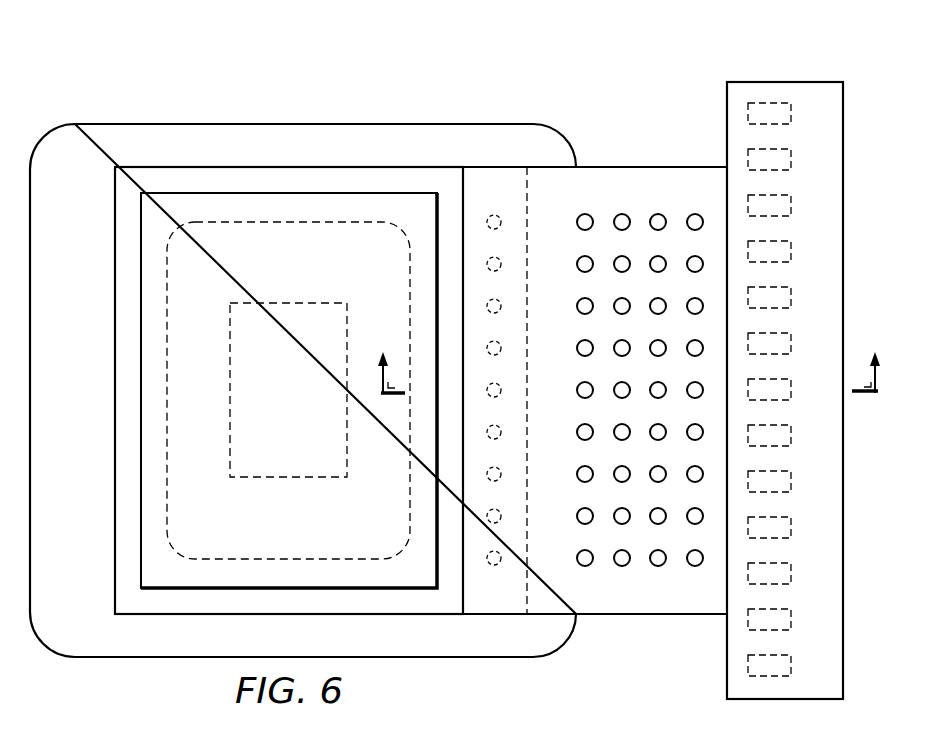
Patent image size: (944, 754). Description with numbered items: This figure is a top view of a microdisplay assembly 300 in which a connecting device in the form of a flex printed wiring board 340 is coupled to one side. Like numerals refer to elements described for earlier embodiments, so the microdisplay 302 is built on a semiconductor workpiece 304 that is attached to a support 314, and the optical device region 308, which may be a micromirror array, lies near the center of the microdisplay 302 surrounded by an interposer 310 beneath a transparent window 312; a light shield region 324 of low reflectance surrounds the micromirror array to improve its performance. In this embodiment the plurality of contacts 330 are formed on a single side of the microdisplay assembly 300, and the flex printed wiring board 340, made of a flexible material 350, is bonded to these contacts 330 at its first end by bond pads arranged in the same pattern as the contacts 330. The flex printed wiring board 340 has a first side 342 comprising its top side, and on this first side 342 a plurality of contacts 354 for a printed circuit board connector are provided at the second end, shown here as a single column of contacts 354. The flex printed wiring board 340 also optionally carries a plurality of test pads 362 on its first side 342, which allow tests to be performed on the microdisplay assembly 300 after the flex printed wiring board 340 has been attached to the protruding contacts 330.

The microdisplay assembly 300 is at (466, 359).
The microdisplay 302 is at (186, 141).
The workpiece 304 is at (497, 185).
The optical device region 308 is at (287, 325).
The interposer 310 is at (289, 333).
The window 312 is at (337, 203).
The support 314 is at (268, 130).
The light shield region 324 is at (191, 394).
The contacts 330 is at (494, 222).
The flex printed wiring board 340 is at (749, 371).
The first side 342 is at (677, 158).
The flexible material 350 is at (595, 384).
The contacts 354 is at (770, 101).
The test pads 362 is at (622, 222).